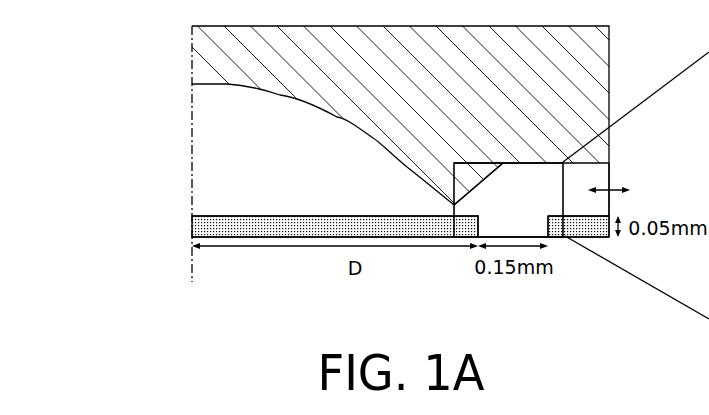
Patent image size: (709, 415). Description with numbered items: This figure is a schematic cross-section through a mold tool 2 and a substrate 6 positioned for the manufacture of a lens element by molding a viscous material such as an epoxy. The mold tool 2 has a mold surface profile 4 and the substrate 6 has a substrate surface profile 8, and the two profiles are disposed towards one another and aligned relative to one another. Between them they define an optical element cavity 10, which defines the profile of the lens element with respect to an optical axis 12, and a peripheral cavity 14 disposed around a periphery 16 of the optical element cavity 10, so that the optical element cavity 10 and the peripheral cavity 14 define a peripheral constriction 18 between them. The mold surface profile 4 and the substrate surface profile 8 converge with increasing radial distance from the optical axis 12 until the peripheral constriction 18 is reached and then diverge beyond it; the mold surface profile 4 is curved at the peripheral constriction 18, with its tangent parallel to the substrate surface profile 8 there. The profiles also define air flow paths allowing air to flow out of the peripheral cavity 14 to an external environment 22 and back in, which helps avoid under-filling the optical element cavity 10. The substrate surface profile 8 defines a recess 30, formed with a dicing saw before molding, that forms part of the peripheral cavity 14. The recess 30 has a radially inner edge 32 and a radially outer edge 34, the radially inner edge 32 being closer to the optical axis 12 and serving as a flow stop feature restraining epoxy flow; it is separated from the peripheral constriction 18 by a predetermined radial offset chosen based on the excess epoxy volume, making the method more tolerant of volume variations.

The mold tool 2 is at (313, 89).
The mold surface profile 4 is at (227, 84).
The substrate 6 is at (198, 223).
The substrate surface profile 8 is at (222, 215).
The optical element cavity 10 is at (210, 147).
The optical axis 12 is at (192, 270).
The peripheral cavity 14 is at (529, 178).
The periphery 16 is at (455, 205).
The peripheral constriction 18 is at (455, 205).
The external environment 22 is at (610, 192).
The recess 30 is at (542, 230).
The radially inner edge 32 is at (470, 227).
The radially outer edge 34 is at (565, 235).